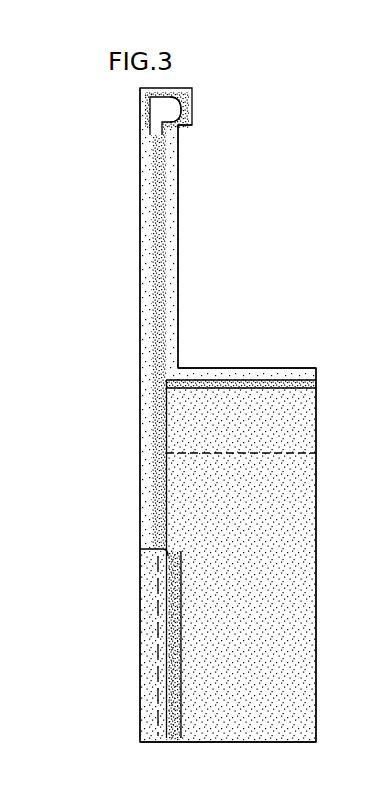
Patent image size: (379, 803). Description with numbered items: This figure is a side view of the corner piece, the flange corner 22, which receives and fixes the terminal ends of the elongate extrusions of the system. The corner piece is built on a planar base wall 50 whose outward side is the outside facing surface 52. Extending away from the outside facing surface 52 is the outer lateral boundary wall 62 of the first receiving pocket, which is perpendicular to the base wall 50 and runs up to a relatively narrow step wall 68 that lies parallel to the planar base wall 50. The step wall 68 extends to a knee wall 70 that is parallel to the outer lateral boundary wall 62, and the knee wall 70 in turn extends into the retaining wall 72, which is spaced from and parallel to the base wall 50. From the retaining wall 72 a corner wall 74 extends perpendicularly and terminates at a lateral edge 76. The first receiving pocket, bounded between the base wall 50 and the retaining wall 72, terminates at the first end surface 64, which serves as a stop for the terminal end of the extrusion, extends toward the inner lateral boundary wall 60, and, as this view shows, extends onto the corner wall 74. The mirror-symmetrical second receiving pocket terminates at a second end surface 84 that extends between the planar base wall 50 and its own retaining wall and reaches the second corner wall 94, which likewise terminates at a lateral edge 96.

The flange corner 22 is at (292, 106).
The planar base wall 50 is at (149, 199).
The outside facing surface 52 is at (140, 172).
The inner lateral boundary wall 60 is at (143, 655).
The outer lateral boundary wall 62 is at (165, 93).
The first end surface 64 is at (158, 231).
The step wall 68 is at (187, 110).
The knee wall 70 is at (183, 128).
The retaining wall 72 is at (178, 217).
The corner wall 74 is at (243, 372).
The lateral edge 76 is at (316, 370).
The second end surface 84 is at (142, 548).
The corner wall 94 is at (302, 632).
The lateral edge 96 is at (317, 685).